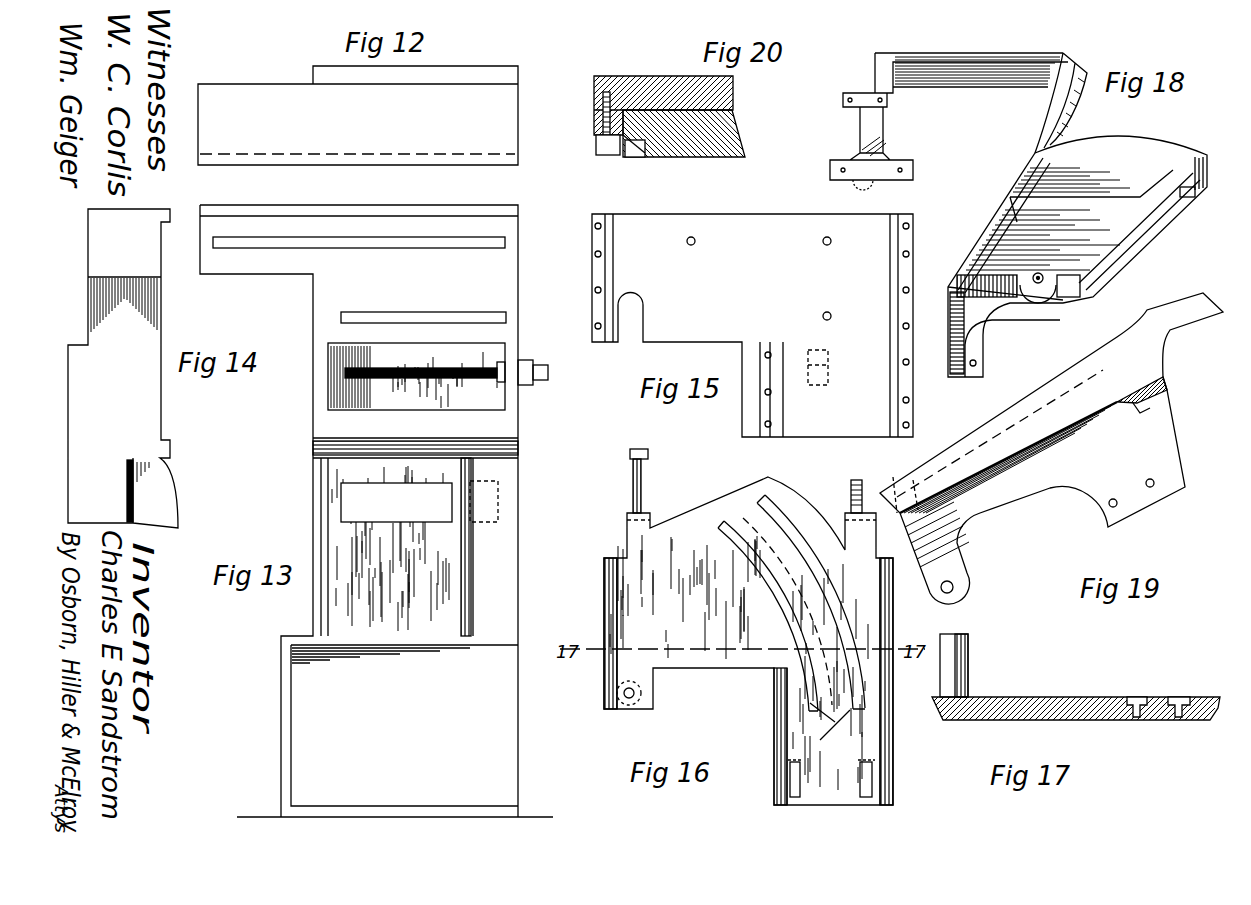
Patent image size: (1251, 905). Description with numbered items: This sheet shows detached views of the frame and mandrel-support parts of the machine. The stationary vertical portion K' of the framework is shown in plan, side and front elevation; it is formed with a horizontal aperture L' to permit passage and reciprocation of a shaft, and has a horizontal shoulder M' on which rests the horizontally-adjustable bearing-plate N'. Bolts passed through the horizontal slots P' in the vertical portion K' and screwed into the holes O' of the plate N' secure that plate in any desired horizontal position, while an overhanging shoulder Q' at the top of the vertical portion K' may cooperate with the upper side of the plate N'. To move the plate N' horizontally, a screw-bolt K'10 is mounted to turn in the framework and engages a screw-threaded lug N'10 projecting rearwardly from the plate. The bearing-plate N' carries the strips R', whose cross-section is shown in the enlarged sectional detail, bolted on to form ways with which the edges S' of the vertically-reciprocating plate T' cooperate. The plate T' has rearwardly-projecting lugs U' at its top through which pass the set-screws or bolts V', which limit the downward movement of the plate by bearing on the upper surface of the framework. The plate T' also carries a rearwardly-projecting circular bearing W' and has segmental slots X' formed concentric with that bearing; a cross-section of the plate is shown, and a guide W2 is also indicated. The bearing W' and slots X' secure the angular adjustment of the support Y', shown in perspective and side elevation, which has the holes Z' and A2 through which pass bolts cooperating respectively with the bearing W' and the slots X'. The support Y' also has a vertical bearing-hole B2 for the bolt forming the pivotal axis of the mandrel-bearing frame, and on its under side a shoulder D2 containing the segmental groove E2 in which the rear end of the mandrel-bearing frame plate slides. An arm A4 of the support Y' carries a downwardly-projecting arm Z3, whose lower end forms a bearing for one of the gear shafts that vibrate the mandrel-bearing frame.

In FIG. 12, the vertical portion of the framework K' is at (372, 115).
In FIG. 13, the vertical portion of the framework K' is at (376, 511).
In FIG. 13, the overhanging shoulder Q' is at (358, 213).
In FIG. 13, the horizontal slots P' is at (359, 275).
In FIG. 13, the screw-bolt K'10 is at (448, 369).
In FIG. 13, the horizontal shoulder M' is at (434, 435).
In FIG. 14, the horizontal shoulder M' is at (135, 368).
In FIG. 13, the horizontal aperture L' is at (415, 547).
In FIG. 20, the horizontally-adjustable bearing-plate N' is at (682, 105).
In FIG. 15, the horizontally-adjustable bearing-plate N' is at (752, 325).
In FIG. 20, the vertically-reciprocating plate T' is at (699, 133).
In FIG. 16, the vertically-reciprocating plate T' is at (781, 603).
In FIG. 17, the vertically-reciprocating plate T' is at (1076, 693).
In FIG. 20, the edges of the vertically-reciprocating plate S' is at (600, 168).
In FIG. 16, the edges of the vertically-reciprocating plate S' is at (746, 641).
In FIG. 17, the edges of the vertically-reciprocating plate S' is at (916, 730).
In FIG. 20, the strips R' is at (634, 163).
In FIG. 15, the strips R' is at (752, 325).
In FIG. 15, the holes O' is at (762, 273).
In FIG. 15, the screw-threaded lug N'10 is at (846, 369).
In FIG. 16, the set-screws or bolts V' is at (749, 481).
In FIG. 16, the rearwardly-projecting lugs U' is at (751, 500).
In FIG. 16, the circular bearing W' is at (651, 705).
In FIG. 17, the circular bearing W' is at (973, 665).
In FIG. 16, the guide W2 is at (863, 787).
In FIG. 16, the segmental slots X' is at (830, 723).
In FIG. 17, the segmental slots X' is at (1158, 728).
In FIG. 18, the arm of the support A4 is at (949, 121).
In FIG. 18, the arm Z3 is at (880, 128).
In FIG. 18, the support Y' is at (1077, 215).
In FIG. 19, the support Y' is at (1051, 448).
In FIG. 18, the shoulder D2 is at (1203, 152).
In FIG. 19, the shoulder D2 is at (1180, 392).
In FIG. 18, the segmental groove E2 is at (1190, 199).
In FIG. 19, the segmental groove E2 is at (1137, 417).
In FIG. 18, the vertical bearing-hole B2 is at (1038, 284).
In FIG. 19, the vertical bearing-hole B2 is at (913, 477).
In FIG. 19, the hole A2 is at (1143, 485).
In FIG. 19, the hole Z' is at (981, 573).